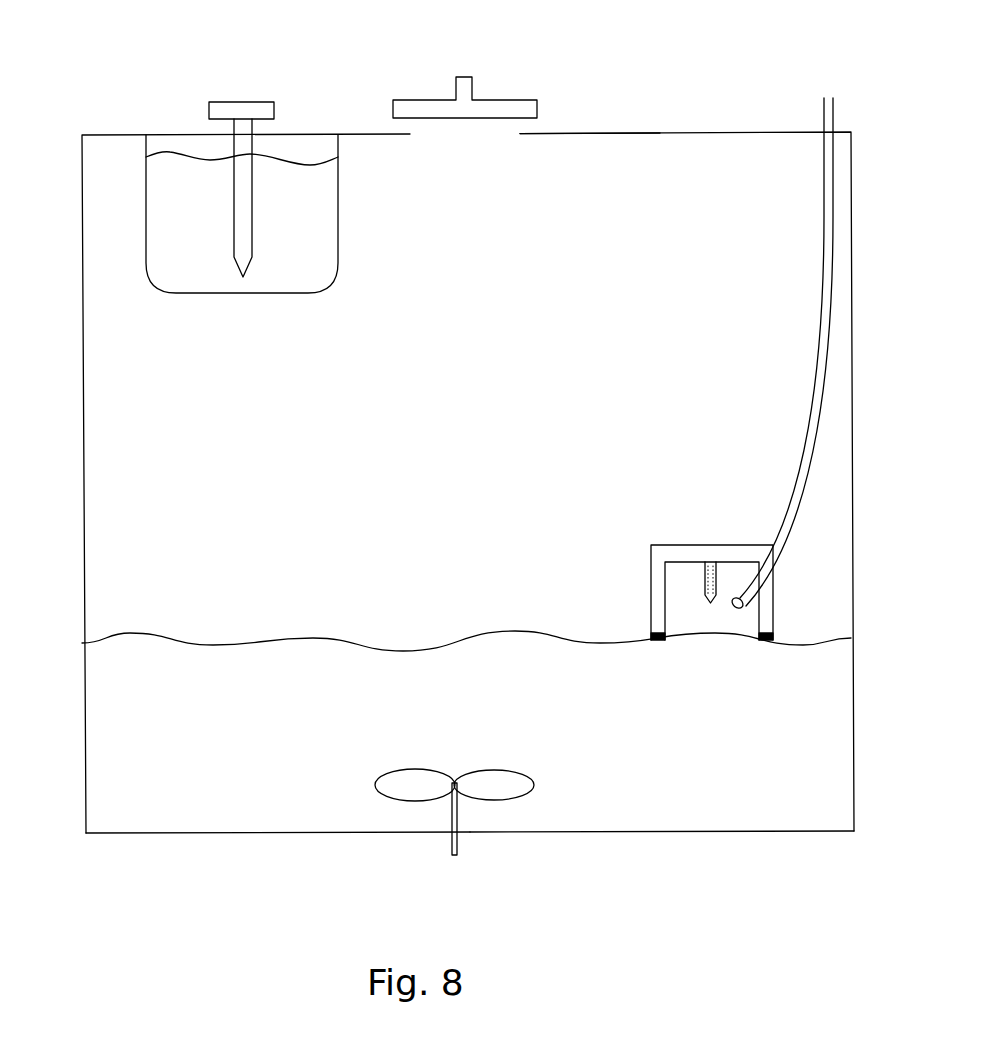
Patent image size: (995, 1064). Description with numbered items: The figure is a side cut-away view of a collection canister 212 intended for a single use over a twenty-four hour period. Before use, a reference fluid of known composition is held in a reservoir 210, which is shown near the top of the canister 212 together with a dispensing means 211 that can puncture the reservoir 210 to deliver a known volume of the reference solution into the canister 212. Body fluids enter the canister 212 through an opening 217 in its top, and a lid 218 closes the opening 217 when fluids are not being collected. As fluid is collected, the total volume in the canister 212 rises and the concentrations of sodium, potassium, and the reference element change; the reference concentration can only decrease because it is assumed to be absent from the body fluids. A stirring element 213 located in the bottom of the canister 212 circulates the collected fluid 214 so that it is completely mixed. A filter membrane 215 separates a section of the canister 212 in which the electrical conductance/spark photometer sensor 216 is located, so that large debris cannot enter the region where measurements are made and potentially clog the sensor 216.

The reservoir 210 is at (163, 198).
The dispensing means 211 is at (242, 100).
The collection canister 212 is at (187, 458).
The stirring element 213 is at (423, 784).
The collected fluid 214 is at (150, 755).
The filter membrane 215 is at (725, 767).
The electrical conductance/spark photometer sensor 216 is at (758, 540).
The opening 217 is at (495, 134).
The lid 218 is at (502, 98).